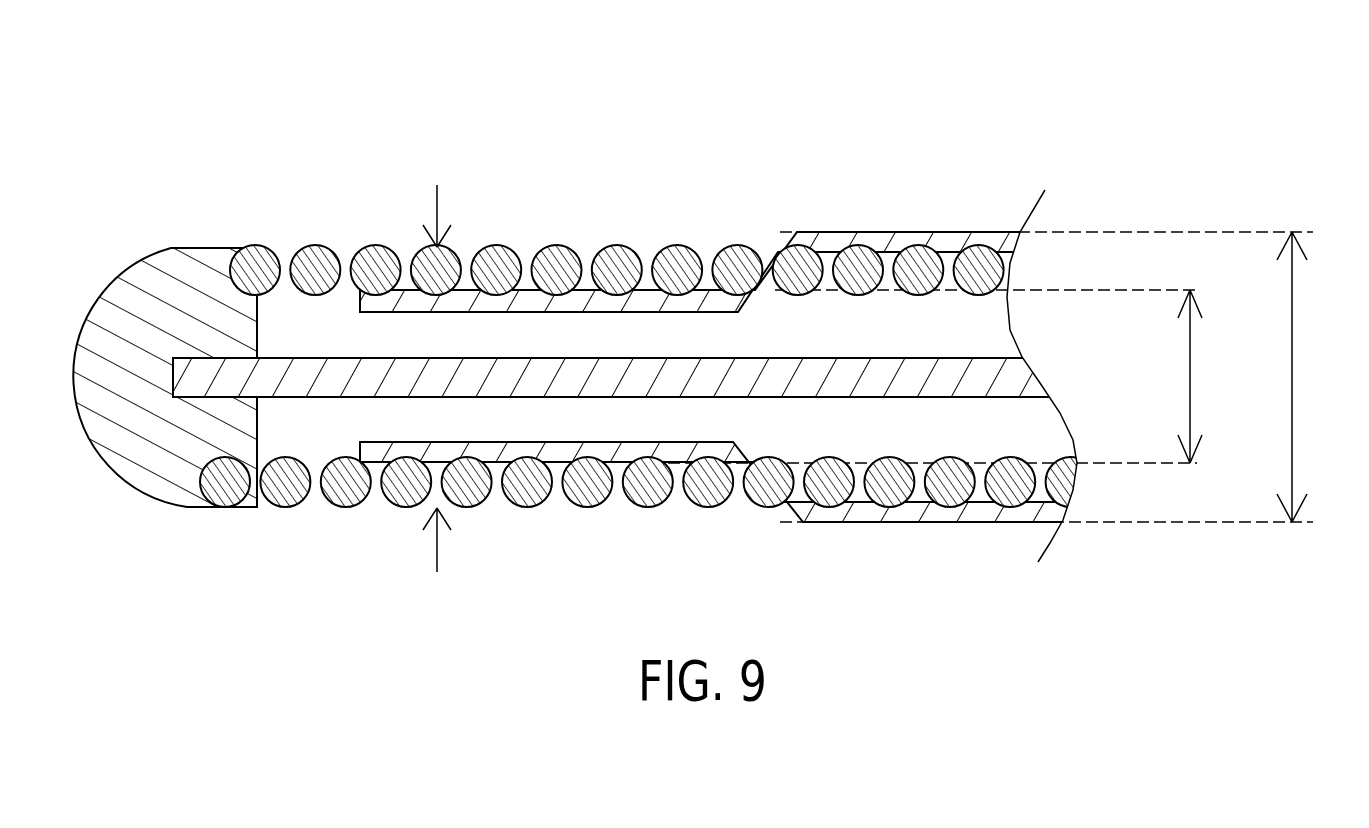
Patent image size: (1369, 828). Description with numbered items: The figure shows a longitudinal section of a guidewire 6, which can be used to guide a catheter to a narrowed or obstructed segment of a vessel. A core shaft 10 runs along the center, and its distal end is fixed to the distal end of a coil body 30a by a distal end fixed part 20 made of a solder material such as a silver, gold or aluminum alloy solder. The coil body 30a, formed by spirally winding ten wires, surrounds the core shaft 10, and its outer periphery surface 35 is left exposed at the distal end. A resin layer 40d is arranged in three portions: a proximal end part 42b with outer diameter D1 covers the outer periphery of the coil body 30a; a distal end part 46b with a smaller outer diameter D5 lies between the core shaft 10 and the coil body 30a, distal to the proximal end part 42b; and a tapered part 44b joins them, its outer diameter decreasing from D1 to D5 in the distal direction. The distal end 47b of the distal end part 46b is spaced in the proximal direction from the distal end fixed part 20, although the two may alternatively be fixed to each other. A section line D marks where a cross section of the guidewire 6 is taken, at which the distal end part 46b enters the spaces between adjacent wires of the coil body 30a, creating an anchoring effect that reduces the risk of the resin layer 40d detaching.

The guidewire 6 is at (275, 173).
The core shaft 10 is at (1030, 387).
The distal end fixed part 20 is at (103, 317).
The coil body 30a is at (1017, 278).
The outer periphery surface 35 is at (622, 250).
The resin layer 40d is at (957, 232).
The proximal end part 42b is at (822, 232).
The tapered part 44b is at (786, 255).
The distal end part 46b is at (526, 300).
The distal end 47b is at (345, 277).
The line D- D is at (435, 375).
The outer diameter D1 is at (1315, 377).
The outer diameter D5 is at (1216, 376).